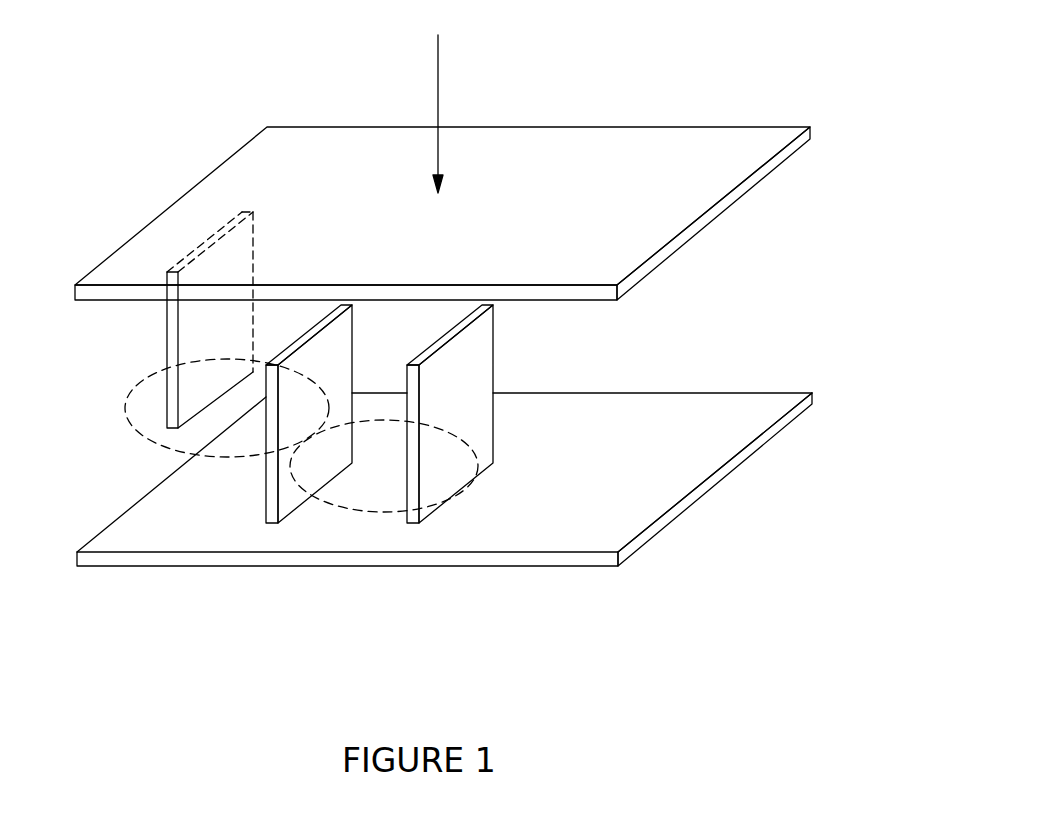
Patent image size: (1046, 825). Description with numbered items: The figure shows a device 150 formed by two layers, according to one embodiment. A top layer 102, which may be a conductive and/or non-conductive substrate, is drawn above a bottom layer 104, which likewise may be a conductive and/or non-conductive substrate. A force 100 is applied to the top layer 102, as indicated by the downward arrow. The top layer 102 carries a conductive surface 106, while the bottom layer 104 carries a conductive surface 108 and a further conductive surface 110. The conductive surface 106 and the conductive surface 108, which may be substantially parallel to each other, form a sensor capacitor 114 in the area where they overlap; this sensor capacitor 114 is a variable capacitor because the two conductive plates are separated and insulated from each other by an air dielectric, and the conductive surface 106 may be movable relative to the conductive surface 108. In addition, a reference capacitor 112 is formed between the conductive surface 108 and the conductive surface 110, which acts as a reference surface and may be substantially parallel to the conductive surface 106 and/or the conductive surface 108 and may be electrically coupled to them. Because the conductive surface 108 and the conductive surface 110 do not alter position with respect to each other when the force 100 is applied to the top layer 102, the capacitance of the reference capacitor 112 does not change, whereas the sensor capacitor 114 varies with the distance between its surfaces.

The force 100 is at (439, 52).
The top layer 102 is at (790, 133).
The bottom layer 104 is at (793, 398).
The conductive surface 106 is at (190, 313).
The conductive surface 108 is at (264, 505).
The conductive surface 110 is at (427, 506).
The reference capacitor 112 is at (470, 470).
The sensor capacitor 114 is at (125, 383).
The device 150 is at (452, 366).